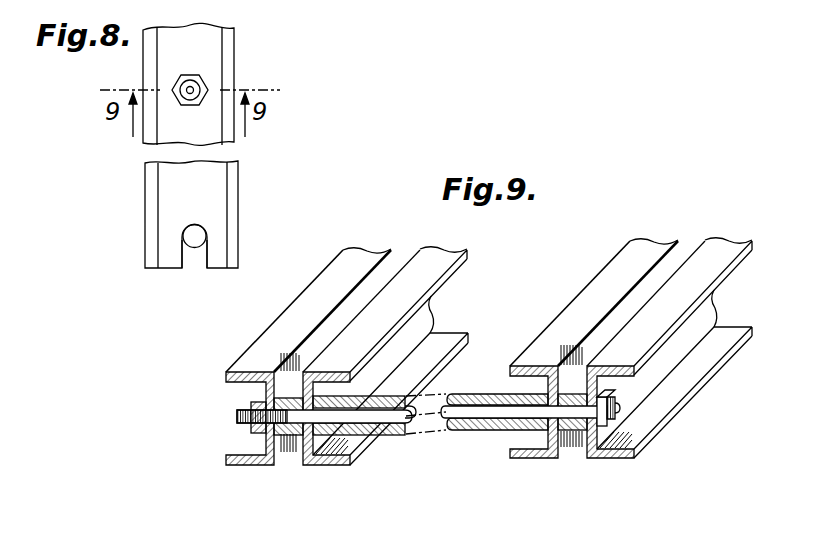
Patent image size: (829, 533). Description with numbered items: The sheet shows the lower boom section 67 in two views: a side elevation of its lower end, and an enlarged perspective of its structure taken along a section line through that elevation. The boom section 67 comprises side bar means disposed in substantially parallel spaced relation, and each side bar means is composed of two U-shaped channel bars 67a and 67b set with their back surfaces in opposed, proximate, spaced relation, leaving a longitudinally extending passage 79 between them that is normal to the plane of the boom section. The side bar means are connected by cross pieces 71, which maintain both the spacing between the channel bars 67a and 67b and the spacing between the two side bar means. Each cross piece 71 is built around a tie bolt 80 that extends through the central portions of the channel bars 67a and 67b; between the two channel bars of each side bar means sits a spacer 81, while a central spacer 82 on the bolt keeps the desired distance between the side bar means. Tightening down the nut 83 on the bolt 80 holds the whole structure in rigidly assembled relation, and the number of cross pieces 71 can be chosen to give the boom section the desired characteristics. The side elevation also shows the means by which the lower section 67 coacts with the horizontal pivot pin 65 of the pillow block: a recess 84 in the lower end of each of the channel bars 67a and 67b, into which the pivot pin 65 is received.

In FIG. 8, the lower section 67 is at (140, 204).
In FIG. 8, the pivot pin 65 is at (184, 233).
In FIG. 8, the recess 84 is at (186, 257).
In FIG. 8, the nut 83 is at (186, 78).
In FIG. 9, the nut 83 is at (252, 402).
In FIG. 8, the tie bolt 80 is at (184, 104).
In FIG. 9, the tie bolt 80 is at (468, 420).
In FIG. 9, the longitudinally extending passage 79 is at (395, 263).
In FIG. 9, the cross piece 71 is at (487, 382).
In FIG. 9, the spacer 81 is at (300, 437).
In FIG. 9, the central spacer 82 is at (497, 432).
In FIG. 9, the U-shaped channel bar 67a is at (252, 466).
In FIG. 9, the U-shaped channel bar 67b is at (332, 465).